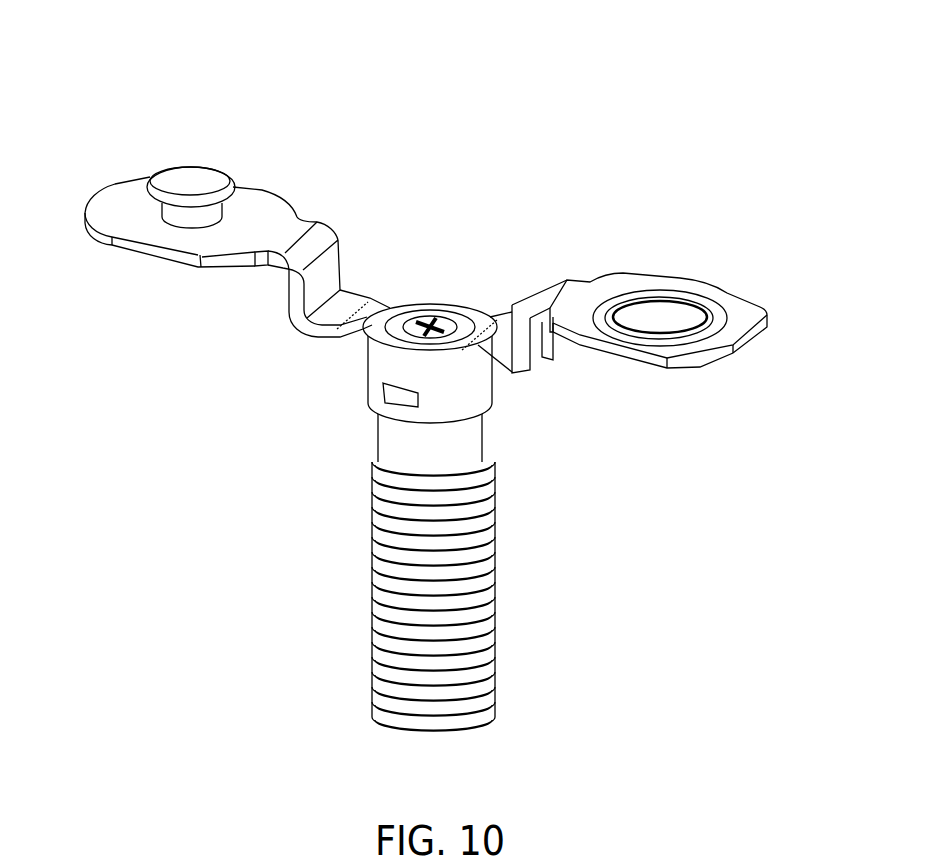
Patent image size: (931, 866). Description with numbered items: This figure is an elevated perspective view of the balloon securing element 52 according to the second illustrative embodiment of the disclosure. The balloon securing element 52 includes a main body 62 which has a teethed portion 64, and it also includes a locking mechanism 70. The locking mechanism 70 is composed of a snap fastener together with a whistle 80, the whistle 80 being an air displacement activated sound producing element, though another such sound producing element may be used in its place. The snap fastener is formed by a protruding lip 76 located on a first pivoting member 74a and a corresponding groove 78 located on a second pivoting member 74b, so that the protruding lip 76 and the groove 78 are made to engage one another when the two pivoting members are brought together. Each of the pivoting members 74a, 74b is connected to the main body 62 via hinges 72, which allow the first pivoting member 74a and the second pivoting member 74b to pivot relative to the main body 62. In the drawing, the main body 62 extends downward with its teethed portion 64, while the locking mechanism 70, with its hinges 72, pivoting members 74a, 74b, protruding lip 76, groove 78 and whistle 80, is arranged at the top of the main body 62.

The balloon securing element 52 is at (255, 510).
The main body 62 is at (460, 445).
The teethed portion 64 is at (493, 608).
The locking mechanism 70 is at (697, 237).
The hinges 72 is at (368, 297).
The first pivoting member 74a is at (130, 203).
The second pivoting member 74b is at (738, 310).
The protruding lip 76 is at (188, 178).
The groove 78 is at (667, 305).
The whistle 80 is at (430, 318).